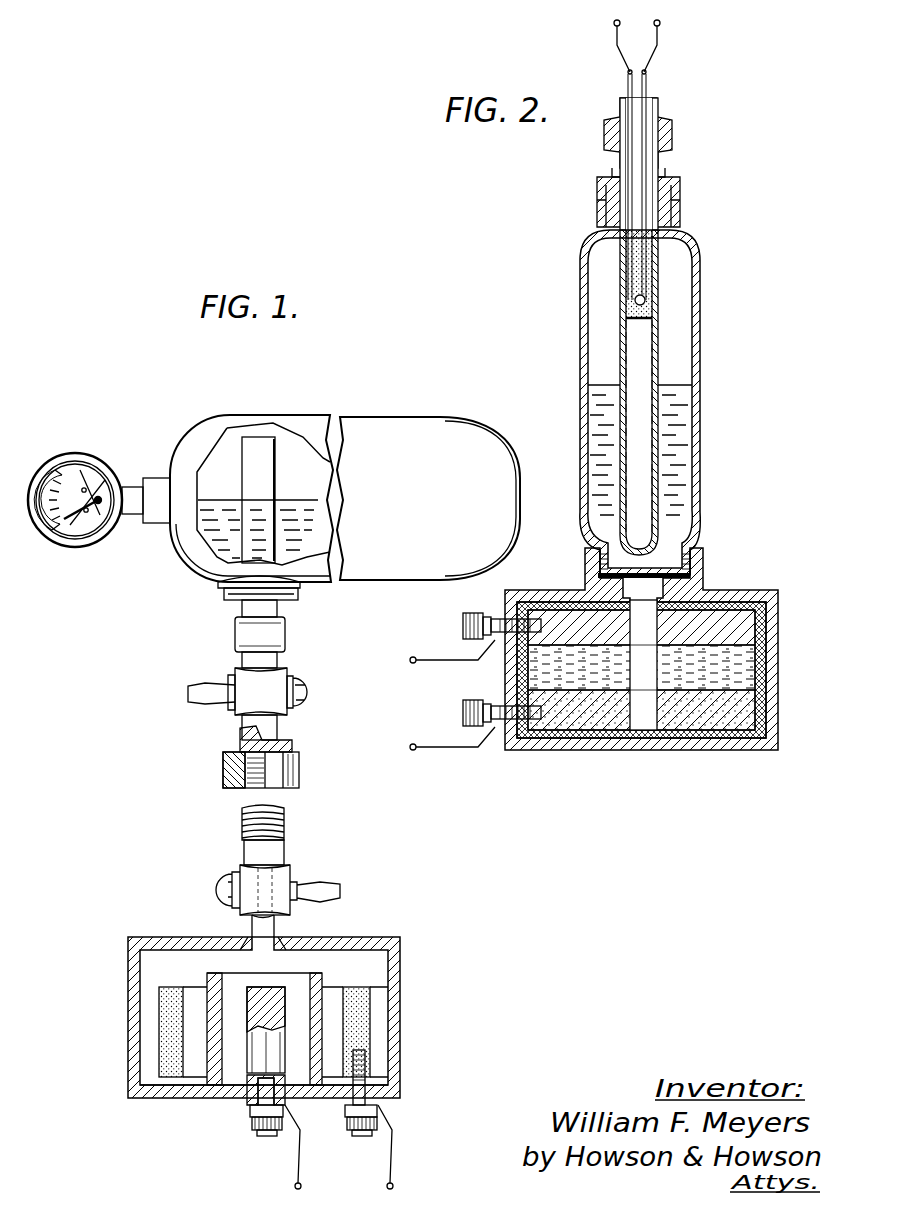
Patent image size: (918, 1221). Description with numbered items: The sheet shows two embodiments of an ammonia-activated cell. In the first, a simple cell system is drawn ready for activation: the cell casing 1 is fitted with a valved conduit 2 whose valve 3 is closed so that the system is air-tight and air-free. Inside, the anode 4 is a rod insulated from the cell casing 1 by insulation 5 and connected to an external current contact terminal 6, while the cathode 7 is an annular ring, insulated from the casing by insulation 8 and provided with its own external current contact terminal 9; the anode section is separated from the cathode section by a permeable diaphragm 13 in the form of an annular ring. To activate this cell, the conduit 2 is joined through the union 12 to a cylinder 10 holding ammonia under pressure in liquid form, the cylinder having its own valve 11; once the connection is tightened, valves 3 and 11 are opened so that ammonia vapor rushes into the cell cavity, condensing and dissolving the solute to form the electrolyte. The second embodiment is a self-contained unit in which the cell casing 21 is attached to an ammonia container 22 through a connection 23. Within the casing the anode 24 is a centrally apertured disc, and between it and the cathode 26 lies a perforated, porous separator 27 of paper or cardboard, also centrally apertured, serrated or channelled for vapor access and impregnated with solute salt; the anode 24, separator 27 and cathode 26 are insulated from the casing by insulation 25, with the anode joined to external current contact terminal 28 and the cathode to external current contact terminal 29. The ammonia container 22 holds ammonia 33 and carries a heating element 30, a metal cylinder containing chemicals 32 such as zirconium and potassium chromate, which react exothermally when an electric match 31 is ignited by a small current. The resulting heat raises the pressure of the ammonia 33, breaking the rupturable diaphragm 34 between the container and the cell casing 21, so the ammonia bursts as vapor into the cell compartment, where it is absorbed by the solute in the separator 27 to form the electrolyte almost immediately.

In FIG. 1, the cell casing 1 is at (401, 957).
In FIG. 1, the valved conduit 2 is at (250, 934).
In FIG. 1, the valve 3 is at (246, 872).
In FIG. 1, the anode 4 is at (262, 1052).
In FIG. 1, the insulation 5 is at (247, 1101).
In FIG. 1, the external current contact terminal 6 is at (256, 1130).
In FIG. 1, the cathode 7 is at (159, 1017).
In FIG. 1, the insulation 8 is at (170, 1086).
In FIG. 1, the external current contact terminal 9 is at (350, 1131).
In FIG. 1, the cylinder 10 is at (251, 416).
In FIG. 1, the valve 11 is at (240, 676).
In FIG. 1, the union 12 is at (298, 786).
In FIG. 1, the permeable diaphragm 13 is at (322, 1014).
In FIG. 2, the cell casing 21 is at (762, 592).
In FIG. 2, the ammonia container 22 is at (580, 330).
In FIG. 2, the connection 23 is at (690, 550).
In FIG. 2, the anode 24 is at (755, 624).
In FIG. 2, the insulation 25 is at (545, 605).
In FIG. 2, the cathode 26 is at (712, 720).
In FIG. 2, the separator 27 is at (755, 680).
In FIG. 2, the external current contact terminal 28 is at (470, 616).
In FIG. 2, the external current contact terminal 29 is at (472, 703).
In FIG. 2, the heating element 30 is at (662, 252).
In FIG. 2, the electric match 31 is at (650, 293).
In FIG. 2, the chemicals 32 is at (655, 318).
In FIG. 2, the ammonia 33 is at (665, 460).
In FIG. 2, the rupturable diaphragm 34 is at (608, 553).